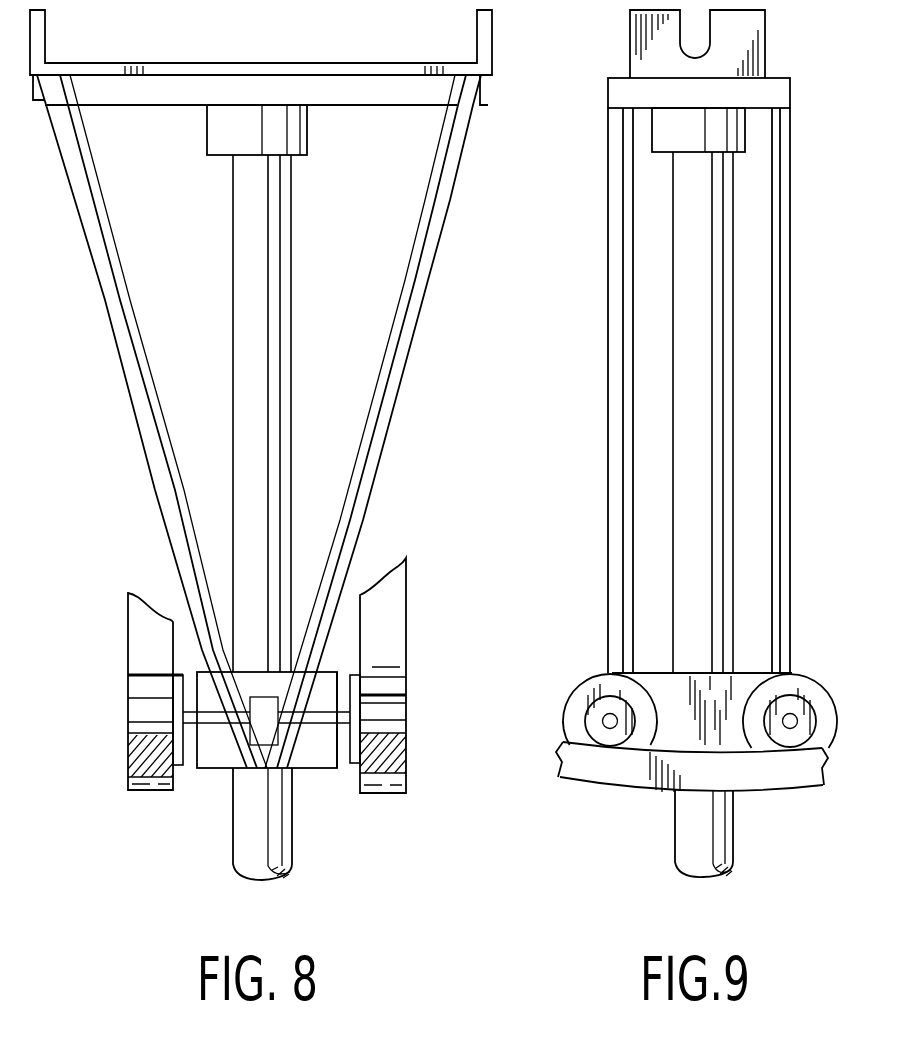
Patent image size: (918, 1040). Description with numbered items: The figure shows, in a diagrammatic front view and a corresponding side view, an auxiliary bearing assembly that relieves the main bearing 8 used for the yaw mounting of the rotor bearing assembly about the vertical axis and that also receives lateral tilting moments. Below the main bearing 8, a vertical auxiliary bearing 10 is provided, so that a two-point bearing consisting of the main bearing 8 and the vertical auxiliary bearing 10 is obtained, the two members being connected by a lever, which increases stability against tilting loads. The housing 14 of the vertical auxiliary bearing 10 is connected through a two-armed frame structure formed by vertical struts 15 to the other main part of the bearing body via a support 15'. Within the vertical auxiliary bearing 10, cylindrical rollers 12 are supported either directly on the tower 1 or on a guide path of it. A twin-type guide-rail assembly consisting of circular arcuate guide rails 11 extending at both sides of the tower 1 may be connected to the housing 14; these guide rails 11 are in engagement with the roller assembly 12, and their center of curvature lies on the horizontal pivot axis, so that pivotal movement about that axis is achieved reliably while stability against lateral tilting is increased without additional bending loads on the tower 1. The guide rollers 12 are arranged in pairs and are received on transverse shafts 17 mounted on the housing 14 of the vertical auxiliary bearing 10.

In FIG. 8, the tower 1 is at (293, 847).
In FIG. 9, the tower 1 is at (681, 848).
In FIG. 8, the main bearing 8 is at (308, 125).
In FIG. 8, the vertical auxiliary bearing 10 is at (213, 760).
In FIG. 8, the guide rails 11 is at (128, 785).
In FIG. 9, the guide rails 11 is at (592, 776).
In FIG. 8, the cylindrical rollers 12 is at (397, 713).
In FIG. 9, the cylindrical rollers 12 is at (583, 686).
In FIG. 8, the housing 14 is at (323, 760).
In FIG. 8, the vertical struts 15 is at (257, 421).
In FIG. 9, the vertical struts 15 is at (662, 390).
In FIG. 8, the support 15' is at (261, 55).
In FIG. 8, the transverse shafts 17 is at (181, 692).